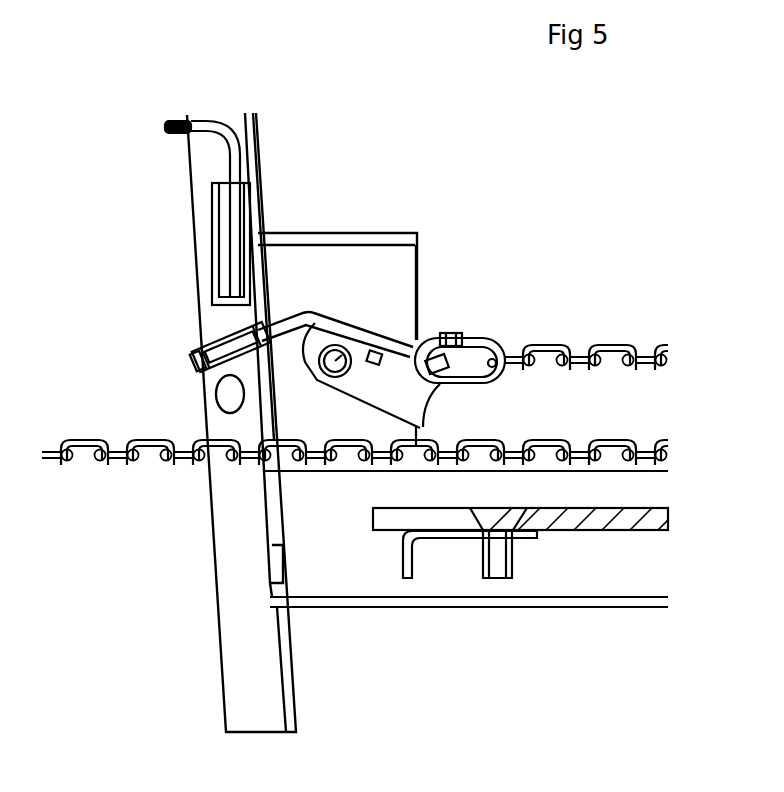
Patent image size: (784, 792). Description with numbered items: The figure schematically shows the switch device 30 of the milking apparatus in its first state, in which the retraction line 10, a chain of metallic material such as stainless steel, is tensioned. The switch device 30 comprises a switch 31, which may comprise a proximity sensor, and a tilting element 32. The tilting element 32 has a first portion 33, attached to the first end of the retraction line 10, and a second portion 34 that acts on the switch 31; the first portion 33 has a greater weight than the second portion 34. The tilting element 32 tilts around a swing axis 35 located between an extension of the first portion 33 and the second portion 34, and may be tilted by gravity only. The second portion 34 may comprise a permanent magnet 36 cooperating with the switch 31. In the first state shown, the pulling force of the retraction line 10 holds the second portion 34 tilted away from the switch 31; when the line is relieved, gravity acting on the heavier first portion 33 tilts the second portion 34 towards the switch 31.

The retraction line 10 is at (563, 347).
The switch device 30 is at (296, 264).
The switch 31 is at (240, 260).
The tilting element 32 is at (323, 315).
The first portion 33 is at (378, 362).
The second portion 34 is at (196, 372).
The swing axis 35 is at (335, 363).
The permanent magnet 36 is at (238, 342).